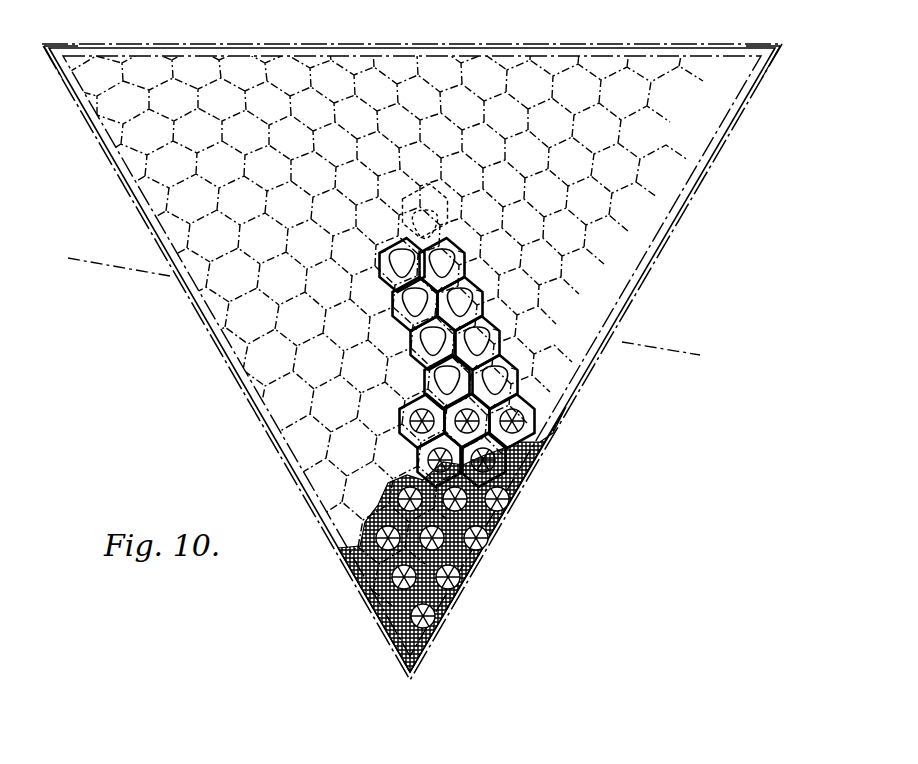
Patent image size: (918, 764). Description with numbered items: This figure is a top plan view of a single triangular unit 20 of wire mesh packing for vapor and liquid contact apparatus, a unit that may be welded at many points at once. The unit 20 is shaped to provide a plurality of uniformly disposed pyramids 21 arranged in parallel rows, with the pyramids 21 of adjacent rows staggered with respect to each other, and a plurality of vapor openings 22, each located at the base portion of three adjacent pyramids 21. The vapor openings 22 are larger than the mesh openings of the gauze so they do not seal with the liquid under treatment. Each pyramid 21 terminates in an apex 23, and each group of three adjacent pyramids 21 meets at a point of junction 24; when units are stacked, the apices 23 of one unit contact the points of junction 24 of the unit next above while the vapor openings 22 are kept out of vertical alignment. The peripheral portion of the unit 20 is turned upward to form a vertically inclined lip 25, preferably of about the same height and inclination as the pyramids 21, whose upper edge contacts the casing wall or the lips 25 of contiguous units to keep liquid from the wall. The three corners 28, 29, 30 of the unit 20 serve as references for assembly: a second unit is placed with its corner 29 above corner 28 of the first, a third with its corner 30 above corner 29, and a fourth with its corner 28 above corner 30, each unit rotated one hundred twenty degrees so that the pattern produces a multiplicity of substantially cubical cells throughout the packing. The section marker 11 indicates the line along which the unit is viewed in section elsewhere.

The section line 11- 11 is at (96, 262).
The unit of packing 20 is at (568, 406).
The pyramids 21 is at (528, 486).
The vapor openings 22 is at (445, 264).
The apices of the pyramids 23 is at (522, 378).
The points of junction 24 is at (483, 323).
The vertically inclined lip 25 is at (662, 250).
The corner 28 is at (421, 665).
The corner 29 is at (78, 56).
The corner 30 is at (752, 60).